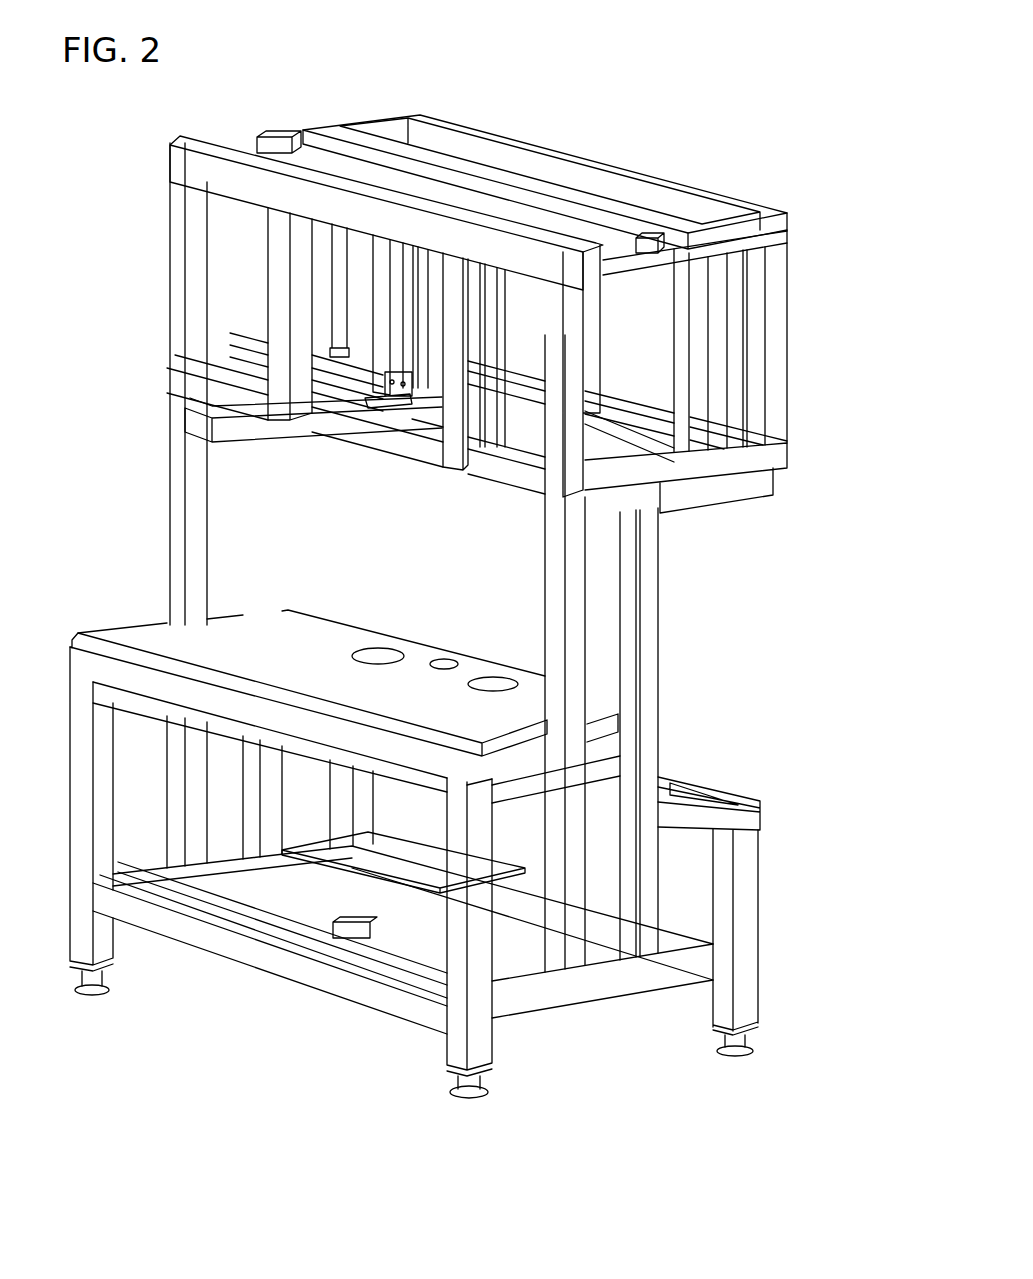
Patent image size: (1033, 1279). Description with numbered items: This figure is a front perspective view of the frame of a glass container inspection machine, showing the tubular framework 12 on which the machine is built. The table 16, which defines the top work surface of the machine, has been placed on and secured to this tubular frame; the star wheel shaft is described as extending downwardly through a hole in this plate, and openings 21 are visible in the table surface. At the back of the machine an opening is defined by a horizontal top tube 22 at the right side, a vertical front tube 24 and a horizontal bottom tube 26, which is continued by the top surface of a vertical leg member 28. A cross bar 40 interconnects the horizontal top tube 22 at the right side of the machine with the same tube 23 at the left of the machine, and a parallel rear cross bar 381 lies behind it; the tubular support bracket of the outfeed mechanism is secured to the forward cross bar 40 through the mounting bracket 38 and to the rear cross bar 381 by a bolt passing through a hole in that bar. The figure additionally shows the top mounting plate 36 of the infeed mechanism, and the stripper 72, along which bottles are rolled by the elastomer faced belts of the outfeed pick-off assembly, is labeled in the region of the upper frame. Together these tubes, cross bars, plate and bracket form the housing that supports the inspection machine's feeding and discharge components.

The tubular framework 12 is at (478, 958).
The table 16 is at (190, 646).
The openings in table top 21 is at (443, 662).
The horizontal top tube 22 is at (745, 482).
The horizontal top tube 23 is at (245, 372).
The vertical front tube 24 is at (650, 641).
The horizontal bottom tube 26 is at (695, 818).
The vertical leg member 28 is at (750, 895).
The top mounting plate 36 is at (533, 450).
The mounting bracket 38 is at (412, 402).
The rear cross bar 381 is at (657, 425).
The cross bar 40 is at (610, 435).
The stripper 72 is at (627, 407).